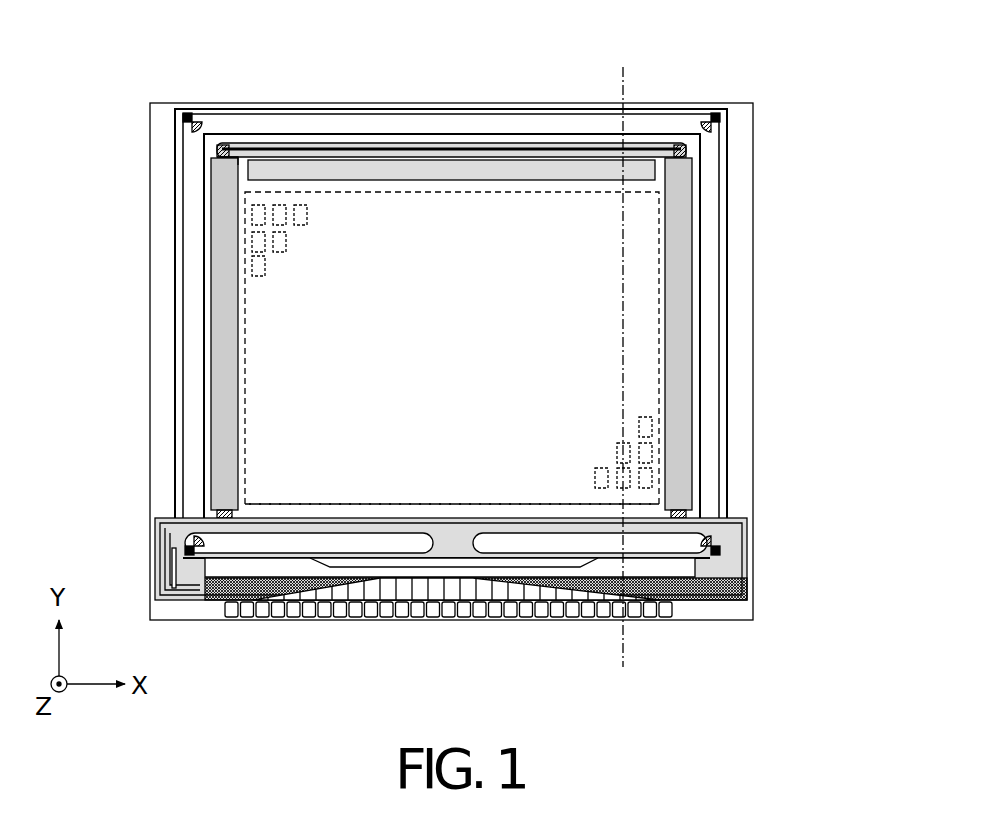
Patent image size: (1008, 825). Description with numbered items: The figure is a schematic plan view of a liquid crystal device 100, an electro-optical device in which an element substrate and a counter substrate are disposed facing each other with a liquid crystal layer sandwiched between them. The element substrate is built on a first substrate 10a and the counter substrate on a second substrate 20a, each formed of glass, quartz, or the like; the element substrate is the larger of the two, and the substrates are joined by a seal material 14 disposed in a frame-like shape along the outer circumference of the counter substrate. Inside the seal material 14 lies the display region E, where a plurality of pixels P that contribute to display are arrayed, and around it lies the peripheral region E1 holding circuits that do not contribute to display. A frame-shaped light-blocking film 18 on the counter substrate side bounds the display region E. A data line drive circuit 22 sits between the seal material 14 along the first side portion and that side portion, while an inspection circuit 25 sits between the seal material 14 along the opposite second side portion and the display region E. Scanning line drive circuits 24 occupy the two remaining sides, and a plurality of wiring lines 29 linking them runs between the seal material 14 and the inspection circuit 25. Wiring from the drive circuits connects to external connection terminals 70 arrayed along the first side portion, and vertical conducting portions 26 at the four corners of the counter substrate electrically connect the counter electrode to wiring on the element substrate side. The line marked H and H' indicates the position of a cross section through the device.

The liquid crystal device 100 is at (797, 28).
The first substrate 10a is at (263, 101).
The second substrate 20a is at (307, 111).
The seal material 14 is at (710, 232).
The scanning line drive circuits 24 is at (232, 347).
The wiring lines 29 is at (418, 142).
The inspection circuit 25 is at (503, 170).
The display region E is at (590, 196).
The peripheral region E1 is at (240, 168).
The light-blocking film 18 is at (324, 505).
The pixels P is at (265, 272).
The data line drive circuit 22 is at (220, 568).
The external connection terminals 70 is at (322, 606).
The vertical conducting portions 26 is at (183, 118).
The section line H' is at (658, 364).
The section line H is at (655, 660).